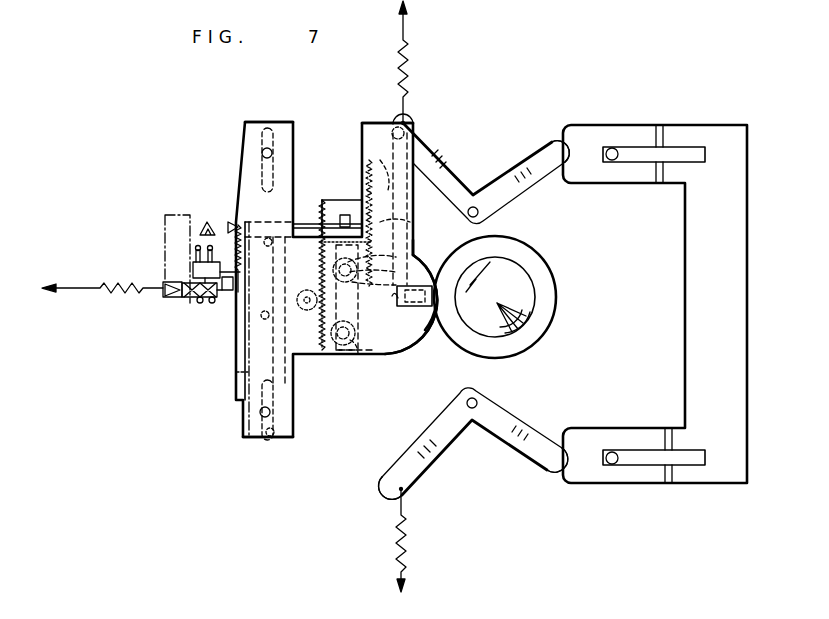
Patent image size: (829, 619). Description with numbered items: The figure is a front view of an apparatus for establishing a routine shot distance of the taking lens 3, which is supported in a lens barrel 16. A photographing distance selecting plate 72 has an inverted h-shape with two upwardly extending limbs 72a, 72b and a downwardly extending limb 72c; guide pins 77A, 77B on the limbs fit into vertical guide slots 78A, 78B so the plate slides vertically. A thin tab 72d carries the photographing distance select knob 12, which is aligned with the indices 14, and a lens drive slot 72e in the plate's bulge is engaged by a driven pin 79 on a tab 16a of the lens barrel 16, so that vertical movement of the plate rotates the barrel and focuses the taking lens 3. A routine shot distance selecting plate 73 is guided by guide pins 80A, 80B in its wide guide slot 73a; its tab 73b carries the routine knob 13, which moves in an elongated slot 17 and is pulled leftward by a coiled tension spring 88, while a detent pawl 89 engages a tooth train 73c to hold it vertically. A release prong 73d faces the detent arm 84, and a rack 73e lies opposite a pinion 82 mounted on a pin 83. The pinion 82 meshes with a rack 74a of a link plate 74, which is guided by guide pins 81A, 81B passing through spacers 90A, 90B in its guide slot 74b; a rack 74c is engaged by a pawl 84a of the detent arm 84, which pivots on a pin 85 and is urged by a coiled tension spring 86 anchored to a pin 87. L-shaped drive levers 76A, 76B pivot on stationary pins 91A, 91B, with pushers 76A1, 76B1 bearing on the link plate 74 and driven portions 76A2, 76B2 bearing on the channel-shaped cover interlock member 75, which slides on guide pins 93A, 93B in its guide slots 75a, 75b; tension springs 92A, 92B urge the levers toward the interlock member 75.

The taking lens 3 is at (522, 272).
The photographing distance select knob 12 is at (193, 268).
The routine shot distance selecting knob 13 is at (166, 297).
The indices 14 is at (200, 231).
The lens barrel 16 is at (520, 340).
The tab 16a is at (436, 322).
The elongated slot 17 is at (165, 215).
The photographing distance selecting plate 72 is at (293, 362).
The upwardly extending limb 72a is at (285, 120).
The upwardly extending limb 72b is at (360, 130).
The downwardly extending limb 72c is at (252, 440).
The thin tab 72d is at (228, 292).
The lens drive slot 72e is at (400, 303).
The routine shot distance selecting plate 73 is at (236, 360).
The guide slot 73a is at (240, 374).
The tab 73b is at (196, 299).
The tooth train 73c is at (228, 226).
The release prong 73d is at (410, 221).
The rack 73e is at (278, 400).
The link plate 74 is at (340, 200).
The rack 74a is at (298, 348).
The guide slot 74b is at (358, 330).
The rack 74c is at (370, 200).
The cover interlock member 75 is at (747, 378).
The guide slot 75a is at (690, 147).
The guide slot 75b is at (660, 466).
The drive lever 76A is at (450, 172).
The pusher 76A1 is at (396, 128).
The driven portion 76A2 is at (550, 142).
The drive lever 76B is at (483, 430).
The pusher 76B1 is at (392, 478).
The driven portion 76B2 is at (546, 472).
The guide pin 77A is at (262, 153).
The guide pin 77B is at (270, 413).
The guide slot 78A is at (262, 136).
The guide slot 78B is at (274, 440).
The driven pin 79 is at (422, 338).
The guide pin 80A is at (266, 238).
The guide pin 80B is at (261, 316).
The guide pin 81A is at (400, 286).
The guide pin 81B is at (358, 354).
The pinion 82 is at (318, 318).
The pin 83 is at (302, 292).
The detent arm 84 is at (390, 172).
The pawl 84a is at (415, 250).
The pin 85 is at (412, 128).
The coiled tension spring 86 is at (322, 200).
The pin 87 is at (320, 220).
The coiled tension spring 88 is at (110, 285).
The detent pawl 89 is at (238, 224).
The spacer 90A is at (333, 268).
The spacer 90B is at (346, 346).
The stationary pin 91A is at (479, 213).
The stationary pin 91B is at (477, 402).
The coiled tension spring 92A is at (407, 66).
The coiled tension spring 92B is at (407, 540).
The guide pin 93A is at (613, 148).
The guide pin 93B is at (612, 464).